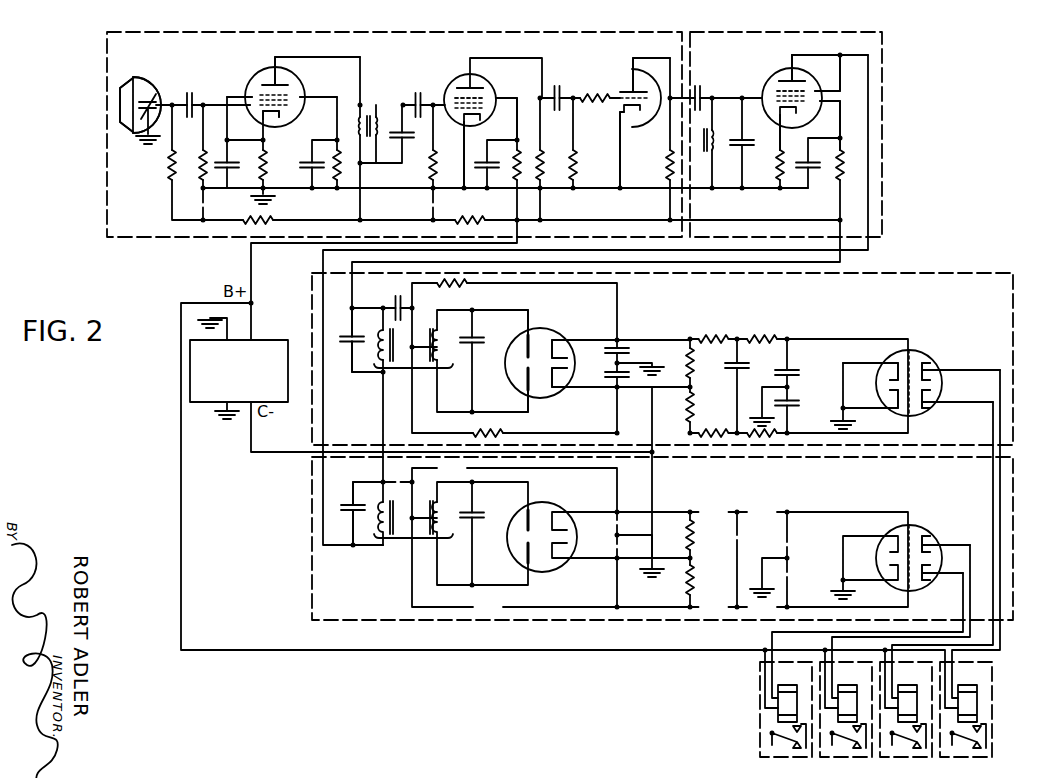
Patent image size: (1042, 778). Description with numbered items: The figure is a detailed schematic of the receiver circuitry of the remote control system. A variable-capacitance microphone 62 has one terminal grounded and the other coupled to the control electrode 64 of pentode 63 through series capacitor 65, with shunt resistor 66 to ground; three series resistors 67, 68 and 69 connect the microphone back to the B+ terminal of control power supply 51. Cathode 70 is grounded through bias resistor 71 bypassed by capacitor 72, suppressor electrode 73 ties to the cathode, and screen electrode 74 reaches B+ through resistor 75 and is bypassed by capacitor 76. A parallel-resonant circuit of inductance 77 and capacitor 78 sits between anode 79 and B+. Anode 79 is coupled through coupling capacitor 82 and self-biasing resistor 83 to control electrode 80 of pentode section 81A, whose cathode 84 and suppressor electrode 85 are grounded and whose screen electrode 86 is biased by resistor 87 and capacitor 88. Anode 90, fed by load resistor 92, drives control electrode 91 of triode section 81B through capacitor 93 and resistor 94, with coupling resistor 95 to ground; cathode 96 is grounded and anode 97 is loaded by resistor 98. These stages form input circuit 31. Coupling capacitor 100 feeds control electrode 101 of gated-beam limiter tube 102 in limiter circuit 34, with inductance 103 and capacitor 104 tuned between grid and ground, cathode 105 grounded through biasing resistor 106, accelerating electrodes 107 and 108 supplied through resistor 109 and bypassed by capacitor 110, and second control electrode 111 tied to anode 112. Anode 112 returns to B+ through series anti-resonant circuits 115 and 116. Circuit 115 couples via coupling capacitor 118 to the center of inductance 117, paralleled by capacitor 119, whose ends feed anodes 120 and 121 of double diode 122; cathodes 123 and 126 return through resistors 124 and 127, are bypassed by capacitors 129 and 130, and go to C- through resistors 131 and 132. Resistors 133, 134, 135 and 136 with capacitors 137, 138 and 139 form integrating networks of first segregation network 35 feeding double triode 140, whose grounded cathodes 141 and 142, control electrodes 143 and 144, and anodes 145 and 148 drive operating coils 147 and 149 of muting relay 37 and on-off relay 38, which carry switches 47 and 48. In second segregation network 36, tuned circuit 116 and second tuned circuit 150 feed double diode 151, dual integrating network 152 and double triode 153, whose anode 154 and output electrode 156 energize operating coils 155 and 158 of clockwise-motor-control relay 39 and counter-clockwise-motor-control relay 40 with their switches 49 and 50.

The input circuit 31 is at (106, 38).
The limiter circuit 34 is at (882, 92).
The first segregation network 35 is at (940, 271).
The second segregation network 36 is at (313, 505).
The muting relay 37 is at (992, 690).
The on-off relay 38 is at (896, 757).
The clockwise-motor-control relay 39 is at (836, 757).
The counter-clockwise-motor-control relay 40 is at (760, 707).
The switch 47 is at (968, 748).
The switch 48 is at (908, 748).
The switch 49 is at (848, 748).
The switch 50 is at (785, 748).
The control power supply 51 is at (268, 340).
The microphone 62 is at (140, 84).
The pentode 63 is at (256, 82).
The control electrode 64 is at (257, 112).
The series capacitor 65 is at (190, 91).
The shunt resistor 66 is at (203, 152).
The resistor 67 is at (170, 162).
The resistor 68 is at (270, 218).
The resistor 69 is at (470, 218).
The cathode 70 is at (272, 122).
The bias resistor 71 is at (275, 166).
The capacitor 72 is at (234, 155).
The suppressor electrode 73 is at (252, 93).
The screen electrode 74 is at (302, 95).
The resistor 75 is at (348, 167).
The capacitor 76 is at (310, 160).
The inductance 77 is at (358, 122).
The capacitor 78 is at (400, 142).
The anode 79 is at (272, 76).
The control electrode 80 is at (462, 122).
The pentode section 81A is at (454, 74).
The triode tube section 81B is at (650, 72).
The series coupling capacitor 82 is at (417, 92).
The self-biasing resistor 83 is at (420, 166).
The cathode 84 is at (481, 121).
The suppressor electrode 85 is at (460, 80).
The screen electrode 86 is at (500, 97).
The resistor 87 is at (518, 145).
The capacitor 88 is at (494, 156).
The anode 90 is at (480, 86).
The control electrode 91 is at (618, 100).
The load resistor 92 is at (551, 152).
The capacitor 93 is at (560, 86).
The resistor 94 is at (592, 95).
The coupling resistor 95 is at (586, 161).
The cathode 96 is at (634, 146).
The anode 97 is at (628, 90).
The load resistor 98 is at (668, 160).
The coupling capacitor 100 is at (700, 92).
The control electrode 101 is at (772, 112).
The limiter tube 102 is at (785, 76).
The inductance 103 is at (714, 134).
The capacitor 104 is at (740, 148).
The cathode 105 is at (786, 118).
The biasing resistor 106 is at (778, 160).
The accelerating electrode 107 is at (812, 110).
The accelerating electrode 108 is at (772, 79).
The resistor 109 is at (842, 160).
The capacitor 110 is at (810, 170).
The second control electrode 111 is at (810, 88).
The anode 112 is at (798, 78).
The anti-resonant circuit 115 is at (358, 373).
The anti-resonant circuit 116 is at (362, 543).
The inductance 117 is at (440, 362).
The coupling capacitor 118 is at (394, 305).
The capacitor 119 is at (474, 338).
The anode 120 is at (524, 378).
The anode 121 is at (524, 345).
The double diode 122 is at (548, 327).
The cathode 123 is at (560, 340).
The resistor 124 is at (452, 285).
The cathode 126 is at (560, 384).
The resistor 127 is at (503, 433).
The capacitor 129 is at (620, 346).
The capacitor 130 is at (620, 380).
The resistor 131 is at (692, 360).
The resistor 132 is at (692, 405).
The resistor 133 is at (722, 337).
The resistor 134 is at (778, 337).
The resistor 135 is at (705, 431).
The resistor 136 is at (775, 433).
The capacitor 137 is at (741, 363).
The capacitor 138 is at (791, 370).
The capacitor 139 is at (791, 400).
The double triode 140 is at (930, 409).
The cathode 141 is at (890, 367).
The cathode 142 is at (890, 396).
The control electrode 143 is at (912, 356).
The control electrode 144 is at (849, 418).
The anode 145 is at (933, 368).
The operating coil 147 is at (968, 690).
The anode 148 is at (935, 400).
The operating coil 149 is at (908, 690).
The second tuned circuit 150 is at (470, 559).
The double diode 151 is at (556, 518).
The dual integrating network 152 is at (725, 575).
The double triode 153 is at (915, 531).
The anode 154 is at (932, 543).
The operating coil 155 is at (848, 690).
The output electrode 156 is at (923, 583).
The operating coil 158 is at (788, 690).